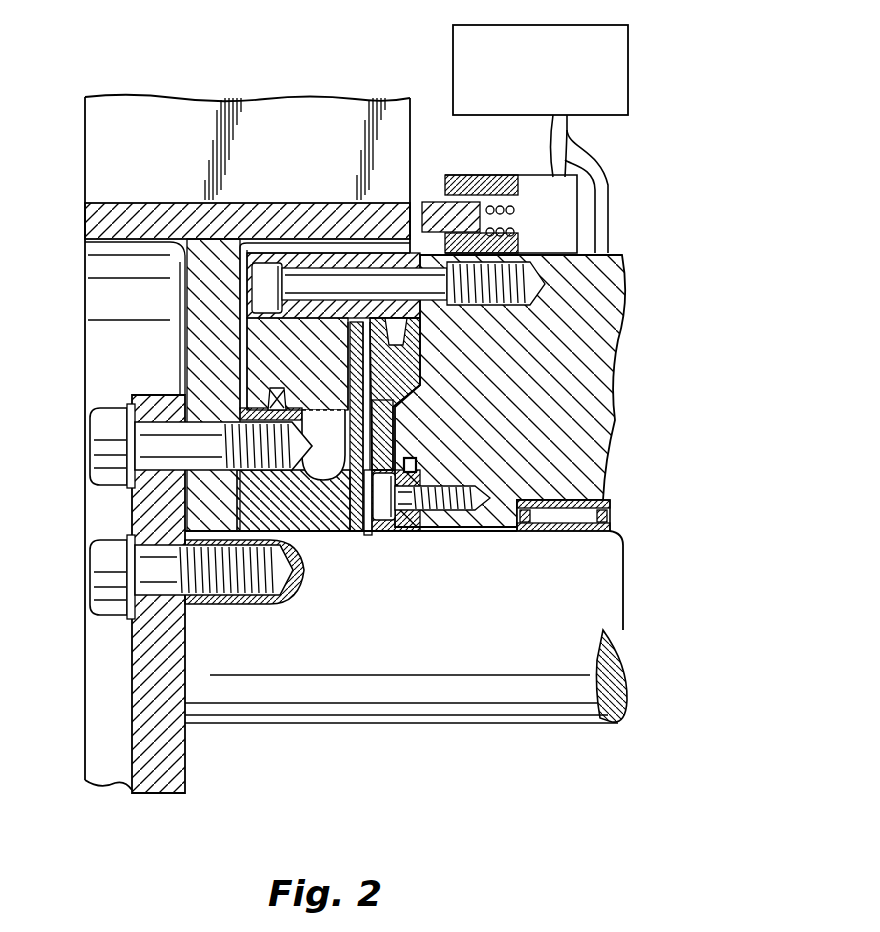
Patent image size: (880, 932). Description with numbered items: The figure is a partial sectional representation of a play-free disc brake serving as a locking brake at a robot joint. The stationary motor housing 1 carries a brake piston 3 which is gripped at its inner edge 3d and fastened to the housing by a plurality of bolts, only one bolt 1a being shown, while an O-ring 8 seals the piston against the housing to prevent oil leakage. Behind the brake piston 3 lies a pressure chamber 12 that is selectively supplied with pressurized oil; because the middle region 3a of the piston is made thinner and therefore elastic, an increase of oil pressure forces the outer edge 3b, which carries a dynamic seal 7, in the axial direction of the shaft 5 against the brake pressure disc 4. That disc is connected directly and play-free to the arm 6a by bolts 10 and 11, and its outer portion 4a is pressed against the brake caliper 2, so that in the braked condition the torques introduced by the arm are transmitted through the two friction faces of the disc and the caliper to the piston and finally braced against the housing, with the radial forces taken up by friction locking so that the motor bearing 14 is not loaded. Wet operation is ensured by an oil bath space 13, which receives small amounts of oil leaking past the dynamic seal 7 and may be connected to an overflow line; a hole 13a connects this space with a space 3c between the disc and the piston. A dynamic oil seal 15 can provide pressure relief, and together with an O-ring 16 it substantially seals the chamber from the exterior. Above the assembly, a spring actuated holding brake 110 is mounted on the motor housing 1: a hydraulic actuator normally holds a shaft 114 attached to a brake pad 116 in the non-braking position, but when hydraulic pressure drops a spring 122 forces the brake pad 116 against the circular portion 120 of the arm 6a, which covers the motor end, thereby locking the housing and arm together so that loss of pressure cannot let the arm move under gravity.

The motor housing 1 is at (570, 384).
The bolt 1a is at (462, 492).
The brake caliper 2 is at (258, 350).
The brake piston 3 is at (405, 372).
The middle region 3a is at (383, 434).
The outer edge 3b is at (400, 352).
The space 3c is at (372, 535).
The inner edge 3d is at (420, 520).
The brake pressure disc 4 is at (336, 512).
The outer portion 4a is at (357, 338).
The shaft 5 is at (318, 690).
The arm 6a is at (100, 222).
The dynamic seal 7 is at (405, 326).
The O-ring 8 is at (416, 464).
The bolt 10 is at (92, 442).
The bolt 11 is at (92, 576).
The pressure chamber 12 is at (425, 392).
The oil bath space 13 is at (341, 446).
The hole 13a is at (333, 366).
The motor bearing 14 is at (568, 520).
The dynamic oil seal 15 is at (280, 392).
The O-ring 16 is at (300, 548).
The spring actuated holding brake 110 is at (527, 149).
The shaft 114 is at (515, 228).
The brake pad 116 is at (432, 192).
The circular portion 120 is at (350, 215).
The spring 122 is at (516, 205).